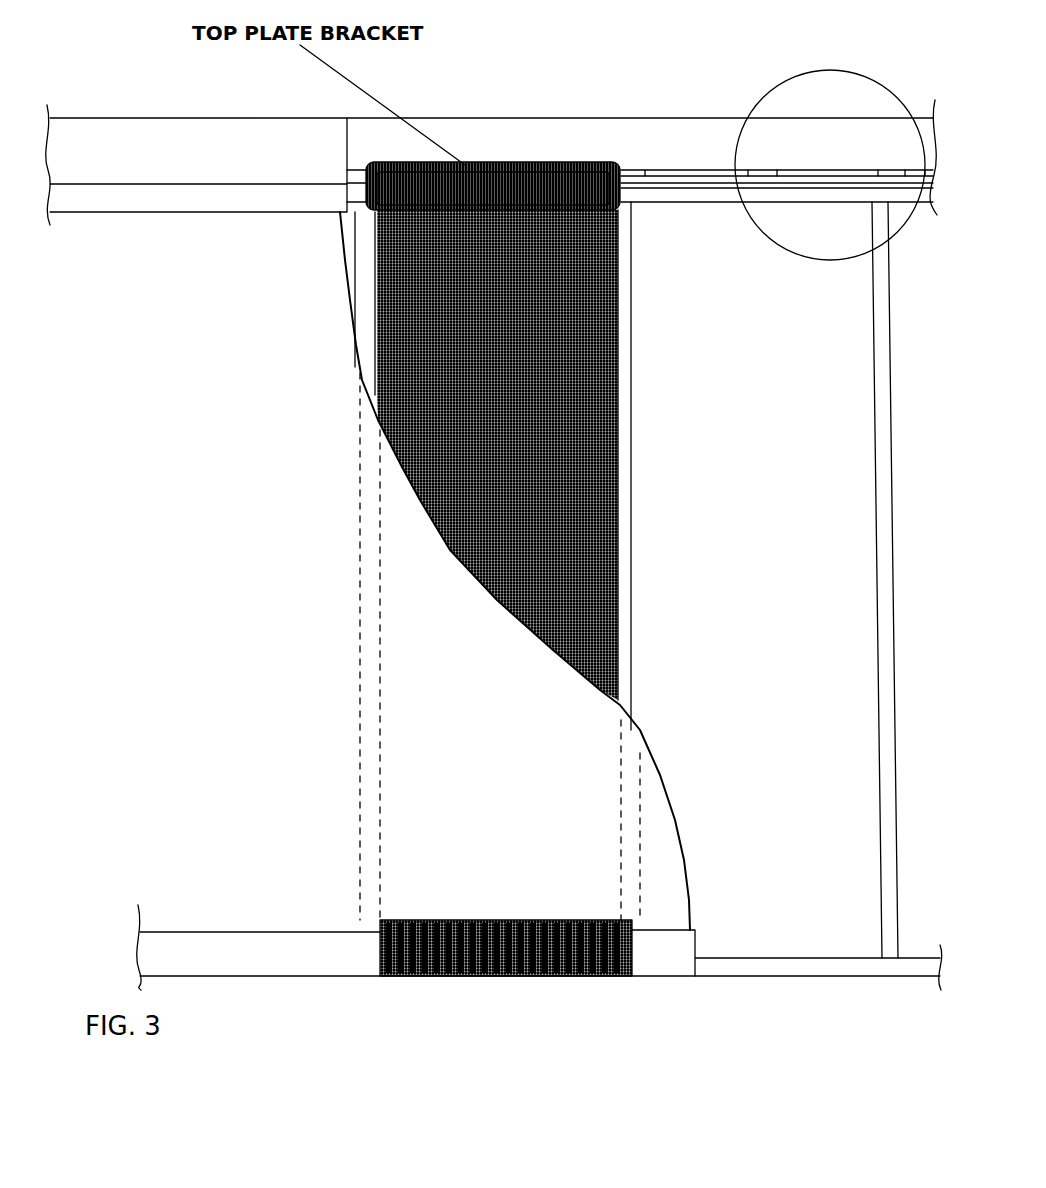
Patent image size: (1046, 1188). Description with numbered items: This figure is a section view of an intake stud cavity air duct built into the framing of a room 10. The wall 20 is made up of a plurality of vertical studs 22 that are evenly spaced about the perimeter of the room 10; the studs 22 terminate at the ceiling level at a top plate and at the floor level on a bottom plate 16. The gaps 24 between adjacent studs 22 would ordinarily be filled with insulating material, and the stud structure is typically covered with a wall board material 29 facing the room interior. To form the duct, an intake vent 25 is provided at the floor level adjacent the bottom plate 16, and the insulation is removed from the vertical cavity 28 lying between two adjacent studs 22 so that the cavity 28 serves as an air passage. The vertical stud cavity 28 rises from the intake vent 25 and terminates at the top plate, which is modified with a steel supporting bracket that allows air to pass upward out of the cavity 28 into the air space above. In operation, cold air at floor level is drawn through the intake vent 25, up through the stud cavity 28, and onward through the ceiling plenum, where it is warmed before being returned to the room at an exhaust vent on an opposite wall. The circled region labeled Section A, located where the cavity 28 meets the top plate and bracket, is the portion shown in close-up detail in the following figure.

The room 10 is at (78, 106).
The bottom plate 16 is at (760, 965).
The wall 20 is at (160, 281).
The vertical stud 22 is at (358, 300).
The gap 24 is at (782, 351).
The intake vent 25 is at (462, 920).
The vertical cavity 28 is at (497, 420).
The wall board material 29 is at (680, 832).
The Section A is at (908, 228).